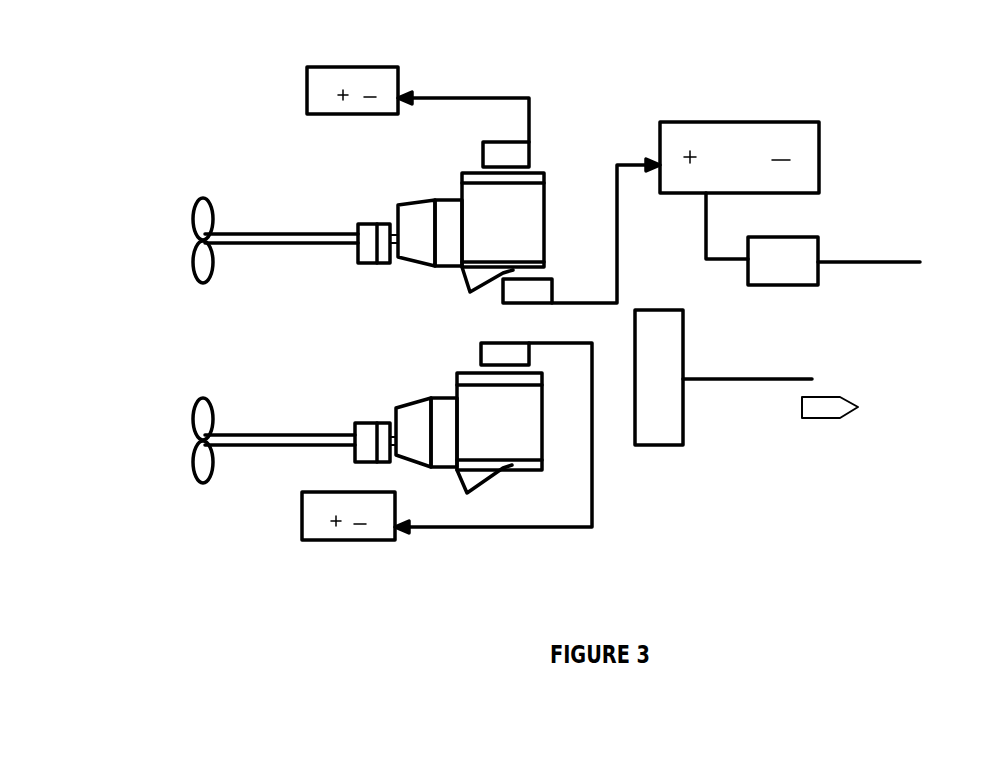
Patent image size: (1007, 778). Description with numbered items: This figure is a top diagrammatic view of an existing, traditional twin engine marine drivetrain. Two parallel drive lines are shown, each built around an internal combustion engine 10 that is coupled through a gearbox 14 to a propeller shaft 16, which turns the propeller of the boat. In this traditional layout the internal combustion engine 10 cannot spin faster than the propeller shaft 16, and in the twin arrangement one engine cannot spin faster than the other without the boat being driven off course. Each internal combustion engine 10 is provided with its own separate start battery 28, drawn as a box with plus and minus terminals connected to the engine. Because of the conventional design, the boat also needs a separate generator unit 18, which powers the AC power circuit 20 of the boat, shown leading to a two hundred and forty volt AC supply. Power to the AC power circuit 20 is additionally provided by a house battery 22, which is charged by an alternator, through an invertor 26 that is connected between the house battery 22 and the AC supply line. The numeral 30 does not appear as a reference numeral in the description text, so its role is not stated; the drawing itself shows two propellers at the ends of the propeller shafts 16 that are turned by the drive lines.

The internal combustion engine 10 is at (527, 203).
The gearbox 14 is at (405, 206).
The propeller shaft 16 is at (268, 234).
The generator unit 18 is at (665, 387).
The AC power circuit 20 is at (763, 375).
The house battery 22 is at (730, 122).
The invertor 26 is at (798, 250).
The start battery 28 is at (322, 82).
The propeller 30 is at (203, 198).